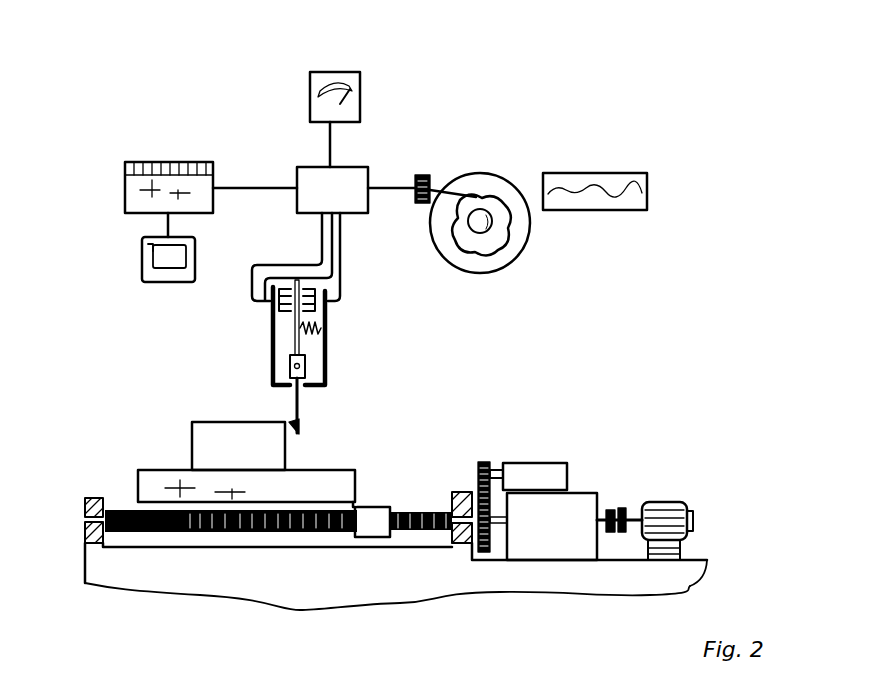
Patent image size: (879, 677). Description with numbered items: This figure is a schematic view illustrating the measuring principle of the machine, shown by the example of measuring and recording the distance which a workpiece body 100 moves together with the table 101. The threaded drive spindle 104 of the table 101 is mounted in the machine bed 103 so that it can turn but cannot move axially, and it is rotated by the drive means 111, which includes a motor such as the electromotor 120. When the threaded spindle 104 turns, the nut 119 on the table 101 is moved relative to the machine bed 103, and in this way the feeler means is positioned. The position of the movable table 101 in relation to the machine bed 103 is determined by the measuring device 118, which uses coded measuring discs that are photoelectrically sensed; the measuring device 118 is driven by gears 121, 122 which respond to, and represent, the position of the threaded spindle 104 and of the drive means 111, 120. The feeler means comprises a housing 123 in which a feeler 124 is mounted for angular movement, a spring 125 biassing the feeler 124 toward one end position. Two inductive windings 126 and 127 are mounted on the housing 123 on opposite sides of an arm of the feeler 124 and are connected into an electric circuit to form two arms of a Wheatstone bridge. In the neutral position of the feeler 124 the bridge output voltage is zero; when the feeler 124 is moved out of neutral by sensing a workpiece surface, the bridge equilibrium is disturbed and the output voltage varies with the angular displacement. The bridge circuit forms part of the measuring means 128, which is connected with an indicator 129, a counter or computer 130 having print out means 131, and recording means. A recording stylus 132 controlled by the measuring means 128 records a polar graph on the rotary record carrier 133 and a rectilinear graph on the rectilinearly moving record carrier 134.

The workpiece body 100 is at (200, 436).
The table 101 is at (157, 477).
The machine bed 103 is at (673, 576).
The threaded drive spindle 104 is at (118, 506).
The drive means 111 is at (590, 493).
The measuring device 118 is at (540, 470).
The nut 119 is at (360, 503).
The electromotor 120 is at (660, 513).
The gear 121 is at (483, 463).
The gear 122 is at (493, 470).
The housing 123 is at (330, 347).
The feeler 124 is at (302, 403).
The spring 125 is at (318, 328).
The inductive winding 126 is at (327, 290).
The inductive winding 127 is at (270, 305).
The measuring means 128 is at (342, 180).
The indicator 129 is at (353, 90).
The counter or computer 130 is at (145, 198).
The print out means 131 is at (150, 272).
The recording stylus 132 is at (423, 173).
The rotary record carrier 133 is at (503, 258).
The record carrier 134 is at (610, 188).